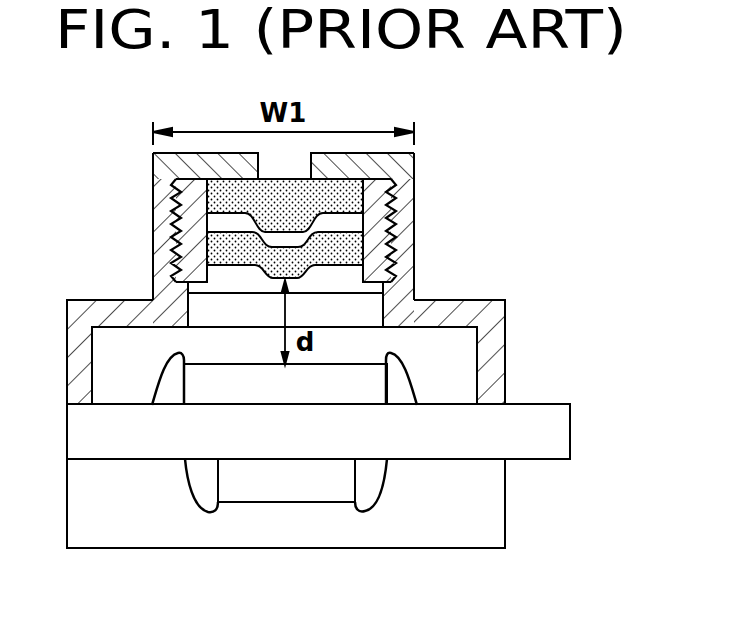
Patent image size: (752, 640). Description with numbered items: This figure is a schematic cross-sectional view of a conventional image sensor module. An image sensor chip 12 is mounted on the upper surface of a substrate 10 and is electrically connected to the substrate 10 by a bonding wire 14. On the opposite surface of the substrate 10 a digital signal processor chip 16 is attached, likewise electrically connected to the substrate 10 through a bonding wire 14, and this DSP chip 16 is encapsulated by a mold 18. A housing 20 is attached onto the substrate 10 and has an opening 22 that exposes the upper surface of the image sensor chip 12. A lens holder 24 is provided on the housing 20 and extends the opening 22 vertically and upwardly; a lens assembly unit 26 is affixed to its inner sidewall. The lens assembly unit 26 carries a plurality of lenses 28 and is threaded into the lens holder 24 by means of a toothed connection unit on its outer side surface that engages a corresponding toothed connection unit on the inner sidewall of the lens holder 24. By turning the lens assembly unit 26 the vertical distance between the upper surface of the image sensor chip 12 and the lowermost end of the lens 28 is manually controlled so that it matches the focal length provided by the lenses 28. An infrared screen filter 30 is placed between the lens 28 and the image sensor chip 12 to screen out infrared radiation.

The substrate 10 is at (562, 436).
The image sensor chip 12 is at (377, 383).
The bonding wire 14 is at (415, 370).
The digital signal processor (DSP) chip 16 is at (284, 495).
The mold 18 is at (436, 535).
The housing 20 is at (505, 316).
The opening 22 is at (385, 313).
The lens holder 24 is at (405, 229).
The lens assembly unit 26 is at (405, 166).
The lens 28 is at (355, 195).
The infrared screen filter 30 is at (197, 308).